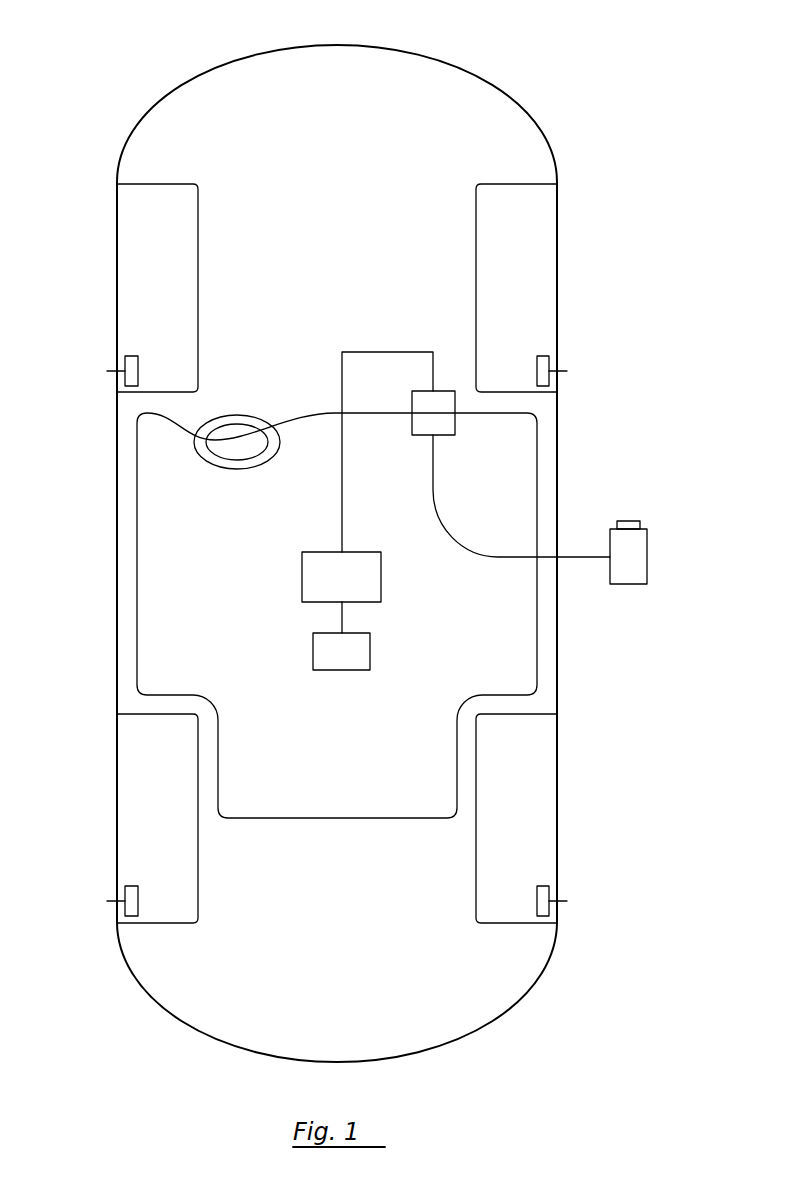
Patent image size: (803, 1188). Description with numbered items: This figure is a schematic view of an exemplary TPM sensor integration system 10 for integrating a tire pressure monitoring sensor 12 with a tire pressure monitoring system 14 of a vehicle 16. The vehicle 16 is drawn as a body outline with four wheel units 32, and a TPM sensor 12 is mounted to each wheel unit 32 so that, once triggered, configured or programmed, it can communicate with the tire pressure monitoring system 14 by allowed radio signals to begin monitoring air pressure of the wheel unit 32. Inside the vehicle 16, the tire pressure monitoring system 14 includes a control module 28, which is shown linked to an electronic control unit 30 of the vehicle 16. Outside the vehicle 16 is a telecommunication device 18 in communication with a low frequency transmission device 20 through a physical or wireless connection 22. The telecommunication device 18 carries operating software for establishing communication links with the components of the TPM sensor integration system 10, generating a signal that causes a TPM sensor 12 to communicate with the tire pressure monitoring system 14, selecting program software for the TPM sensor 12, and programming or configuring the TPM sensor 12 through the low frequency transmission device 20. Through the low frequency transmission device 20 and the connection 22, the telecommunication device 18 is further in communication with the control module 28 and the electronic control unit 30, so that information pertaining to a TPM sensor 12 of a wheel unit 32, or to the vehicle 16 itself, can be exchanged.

The TPM sensor integration system 10 is at (668, 518).
The tire pressure monitoring sensor 12 is at (138, 371).
The tire pressure monitoring system 14 is at (339, 677).
The vehicle 16 is at (336, 45).
The telecommunication device 18 is at (626, 521).
The low frequency transmission device 20 is at (648, 557).
The physical or wireless connection 22 is at (447, 532).
The control module 28 is at (313, 652).
The electronic control unit 30 is at (302, 577).
The wheel unit 32 is at (100, 281).